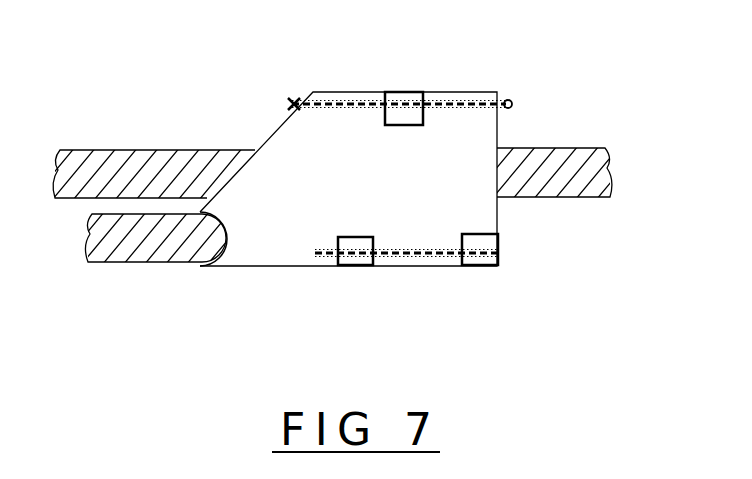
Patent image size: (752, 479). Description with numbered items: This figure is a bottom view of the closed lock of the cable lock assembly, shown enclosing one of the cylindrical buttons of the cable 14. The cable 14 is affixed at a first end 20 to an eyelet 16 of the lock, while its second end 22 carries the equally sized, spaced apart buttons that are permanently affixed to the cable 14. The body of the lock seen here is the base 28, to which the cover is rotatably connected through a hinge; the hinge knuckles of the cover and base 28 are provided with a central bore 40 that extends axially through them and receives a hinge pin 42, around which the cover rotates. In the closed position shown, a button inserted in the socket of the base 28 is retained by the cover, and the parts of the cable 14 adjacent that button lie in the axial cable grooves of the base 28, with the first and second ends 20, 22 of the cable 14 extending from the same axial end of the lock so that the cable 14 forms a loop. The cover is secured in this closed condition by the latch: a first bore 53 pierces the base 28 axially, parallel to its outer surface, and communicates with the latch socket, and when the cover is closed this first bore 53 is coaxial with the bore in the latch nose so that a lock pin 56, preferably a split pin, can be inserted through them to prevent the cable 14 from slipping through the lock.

The cable 14 is at (583, 153).
The eyelet 16 is at (226, 258).
The first end 20 is at (183, 254).
The second end 22 is at (143, 158).
The base 28 is at (283, 150).
The central bore 40 is at (410, 257).
The hinge pin 42 is at (498, 253).
The first bore 53 is at (358, 102).
The lock pin 56 is at (513, 100).